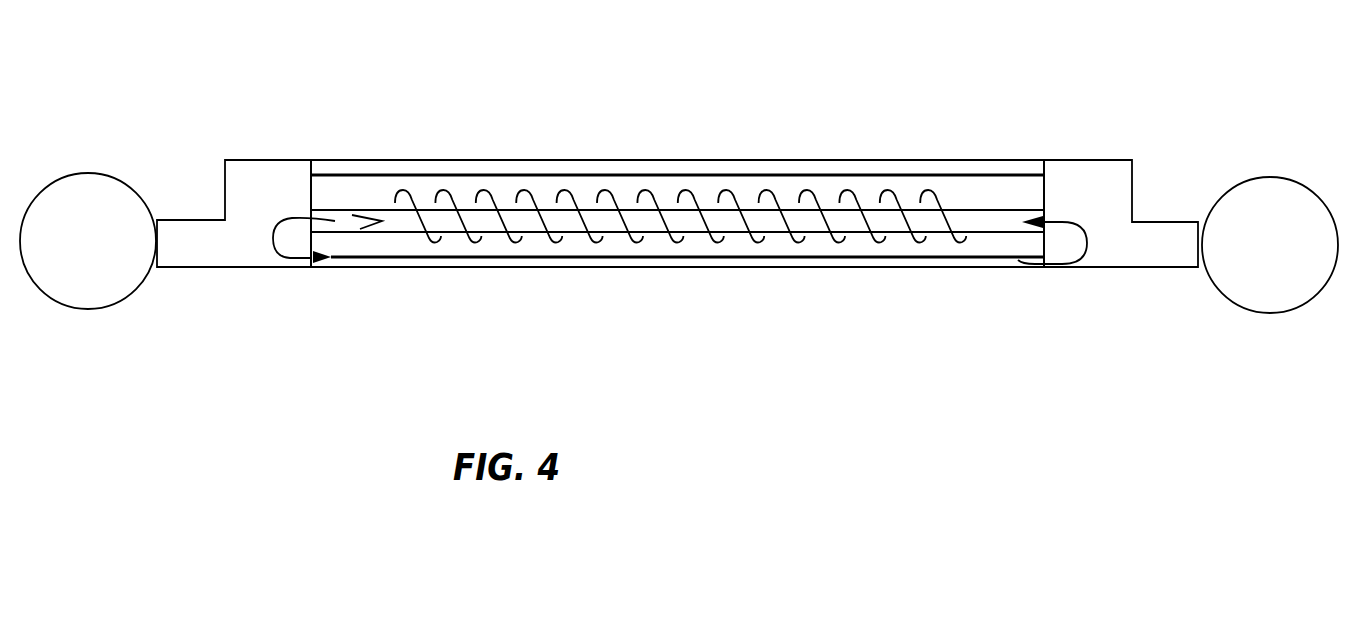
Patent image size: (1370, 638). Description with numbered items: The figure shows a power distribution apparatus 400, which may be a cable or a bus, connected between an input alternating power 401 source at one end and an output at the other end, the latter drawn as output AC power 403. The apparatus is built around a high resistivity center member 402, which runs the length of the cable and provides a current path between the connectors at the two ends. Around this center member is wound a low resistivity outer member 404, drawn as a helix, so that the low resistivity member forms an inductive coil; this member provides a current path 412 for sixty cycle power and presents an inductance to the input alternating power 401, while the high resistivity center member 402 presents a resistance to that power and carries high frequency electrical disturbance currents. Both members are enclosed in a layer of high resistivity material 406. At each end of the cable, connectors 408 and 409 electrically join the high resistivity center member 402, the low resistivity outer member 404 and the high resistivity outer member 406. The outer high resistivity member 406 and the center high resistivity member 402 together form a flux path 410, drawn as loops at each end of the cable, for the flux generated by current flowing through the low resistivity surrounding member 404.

The power distribution apparatus 400 is at (717, 97).
The input alternating power 401 is at (122, 298).
The high resistivity center member 402 is at (400, 228).
The output AC power 403 is at (1242, 307).
The low resistivity outer member 404 is at (543, 242).
The layer of high resistivity material 406 is at (657, 263).
The connector 408 is at (275, 185).
The connector 409 is at (1122, 248).
The flux path 410 is at (290, 260).
The current path 412 is at (349, 222).